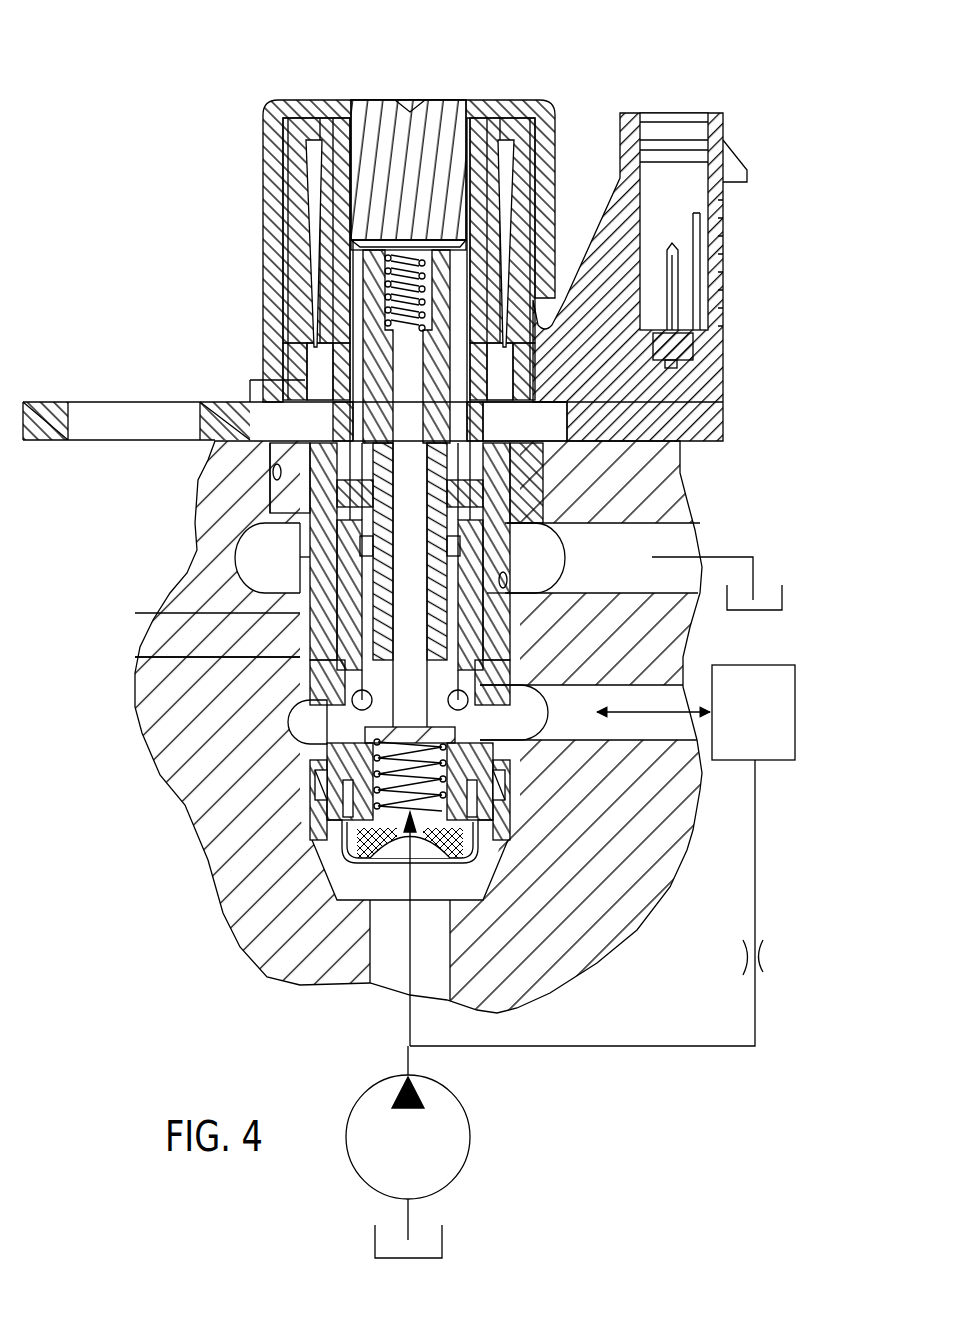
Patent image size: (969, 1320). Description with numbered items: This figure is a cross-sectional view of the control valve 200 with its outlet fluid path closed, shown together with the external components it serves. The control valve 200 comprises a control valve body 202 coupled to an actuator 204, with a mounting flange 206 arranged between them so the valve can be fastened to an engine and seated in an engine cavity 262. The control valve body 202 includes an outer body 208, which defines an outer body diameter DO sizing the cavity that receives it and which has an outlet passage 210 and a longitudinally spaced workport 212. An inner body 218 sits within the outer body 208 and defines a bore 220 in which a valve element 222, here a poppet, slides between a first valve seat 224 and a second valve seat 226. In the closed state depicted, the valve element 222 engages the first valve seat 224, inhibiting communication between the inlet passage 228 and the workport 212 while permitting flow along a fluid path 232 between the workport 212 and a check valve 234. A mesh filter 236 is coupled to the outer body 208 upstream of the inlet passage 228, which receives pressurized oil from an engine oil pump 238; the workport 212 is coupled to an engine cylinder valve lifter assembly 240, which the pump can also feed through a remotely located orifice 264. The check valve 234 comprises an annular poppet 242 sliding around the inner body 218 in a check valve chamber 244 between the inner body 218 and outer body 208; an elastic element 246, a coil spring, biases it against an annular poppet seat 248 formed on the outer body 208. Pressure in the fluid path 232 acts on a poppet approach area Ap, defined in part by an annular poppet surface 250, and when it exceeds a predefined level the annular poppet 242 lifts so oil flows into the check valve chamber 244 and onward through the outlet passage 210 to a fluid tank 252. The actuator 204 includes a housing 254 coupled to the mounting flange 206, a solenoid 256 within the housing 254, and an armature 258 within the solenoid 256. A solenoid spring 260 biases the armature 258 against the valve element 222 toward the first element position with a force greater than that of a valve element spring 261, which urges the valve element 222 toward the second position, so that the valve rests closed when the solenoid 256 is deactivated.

The control valve 200 is at (150, 57).
The control valve body 202 is at (213, 687).
The actuator 204 is at (459, 271).
The mounting flange 206 is at (42, 402).
The outer body 208 is at (542, 478).
The outlet passage 210 is at (263, 565).
The workport 212 is at (310, 723).
The inner body 218 is at (497, 443).
The bore 220 is at (365, 528).
The valve element 222 is at (423, 602).
The first valve seat 224 is at (375, 757).
The second valve seat 226 is at (290, 713).
The inlet passage 228 is at (430, 842).
The fluid path 232 is at (450, 645).
The check valve 234 is at (515, 560).
The mesh filter 236 is at (355, 866).
The engine oil pump 238 is at (470, 1133).
The engine cylinder valve lifter assembly 240 is at (731, 762).
The annular poppet 242 is at (507, 570).
The check valve chamber 244 is at (317, 525).
The elastic element 246 is at (320, 558).
The annular poppet seat 248 is at (500, 588).
The annular poppet surface 250 is at (283, 618).
The fluid tank 252 is at (788, 590).
The housing 254 is at (538, 120).
The solenoid 256 is at (315, 150).
The armature 258 is at (377, 345).
The solenoid spring 260 is at (382, 245).
The valve element spring 261 is at (345, 793).
The engine cavity 262 is at (273, 464).
The orifice 264 is at (763, 970).
The poppet approach area Ap is at (300, 662).
The outer body diameter DO is at (268, 494).